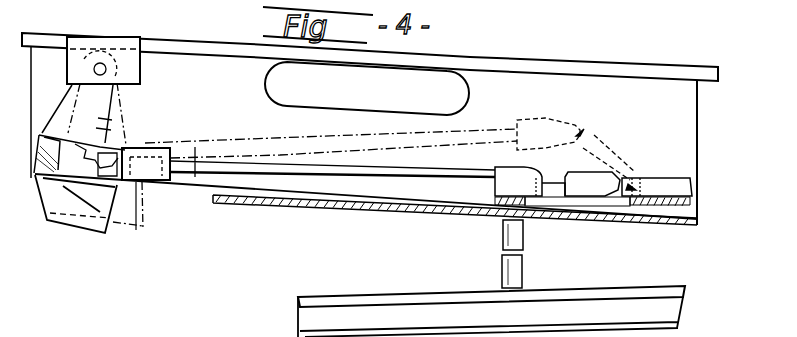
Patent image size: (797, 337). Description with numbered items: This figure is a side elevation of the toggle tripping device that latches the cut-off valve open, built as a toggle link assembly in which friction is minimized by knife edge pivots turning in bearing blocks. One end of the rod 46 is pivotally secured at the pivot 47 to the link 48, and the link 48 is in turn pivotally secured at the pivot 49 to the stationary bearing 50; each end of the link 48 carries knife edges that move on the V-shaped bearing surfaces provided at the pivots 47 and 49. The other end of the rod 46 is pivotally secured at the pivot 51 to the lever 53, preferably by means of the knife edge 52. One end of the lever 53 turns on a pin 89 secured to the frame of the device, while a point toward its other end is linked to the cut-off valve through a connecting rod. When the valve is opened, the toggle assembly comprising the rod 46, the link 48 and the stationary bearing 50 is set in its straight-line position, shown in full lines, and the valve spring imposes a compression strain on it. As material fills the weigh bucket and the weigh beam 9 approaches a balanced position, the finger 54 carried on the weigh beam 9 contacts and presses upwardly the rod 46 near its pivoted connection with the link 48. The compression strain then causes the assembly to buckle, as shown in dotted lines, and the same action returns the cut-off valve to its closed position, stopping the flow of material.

The weigh beam 9 is at (444, 296).
The rod 46 is at (343, 180).
The pivot 47 is at (580, 132).
The link 48 is at (607, 151).
The pivot 49 is at (632, 187).
The stationary bearing 50 is at (683, 179).
The pivot 51 is at (88, 176).
The knife edge 52 is at (111, 160).
The lever 53 is at (105, 100).
The finger 54 is at (504, 236).
The pin 89 is at (94, 69).